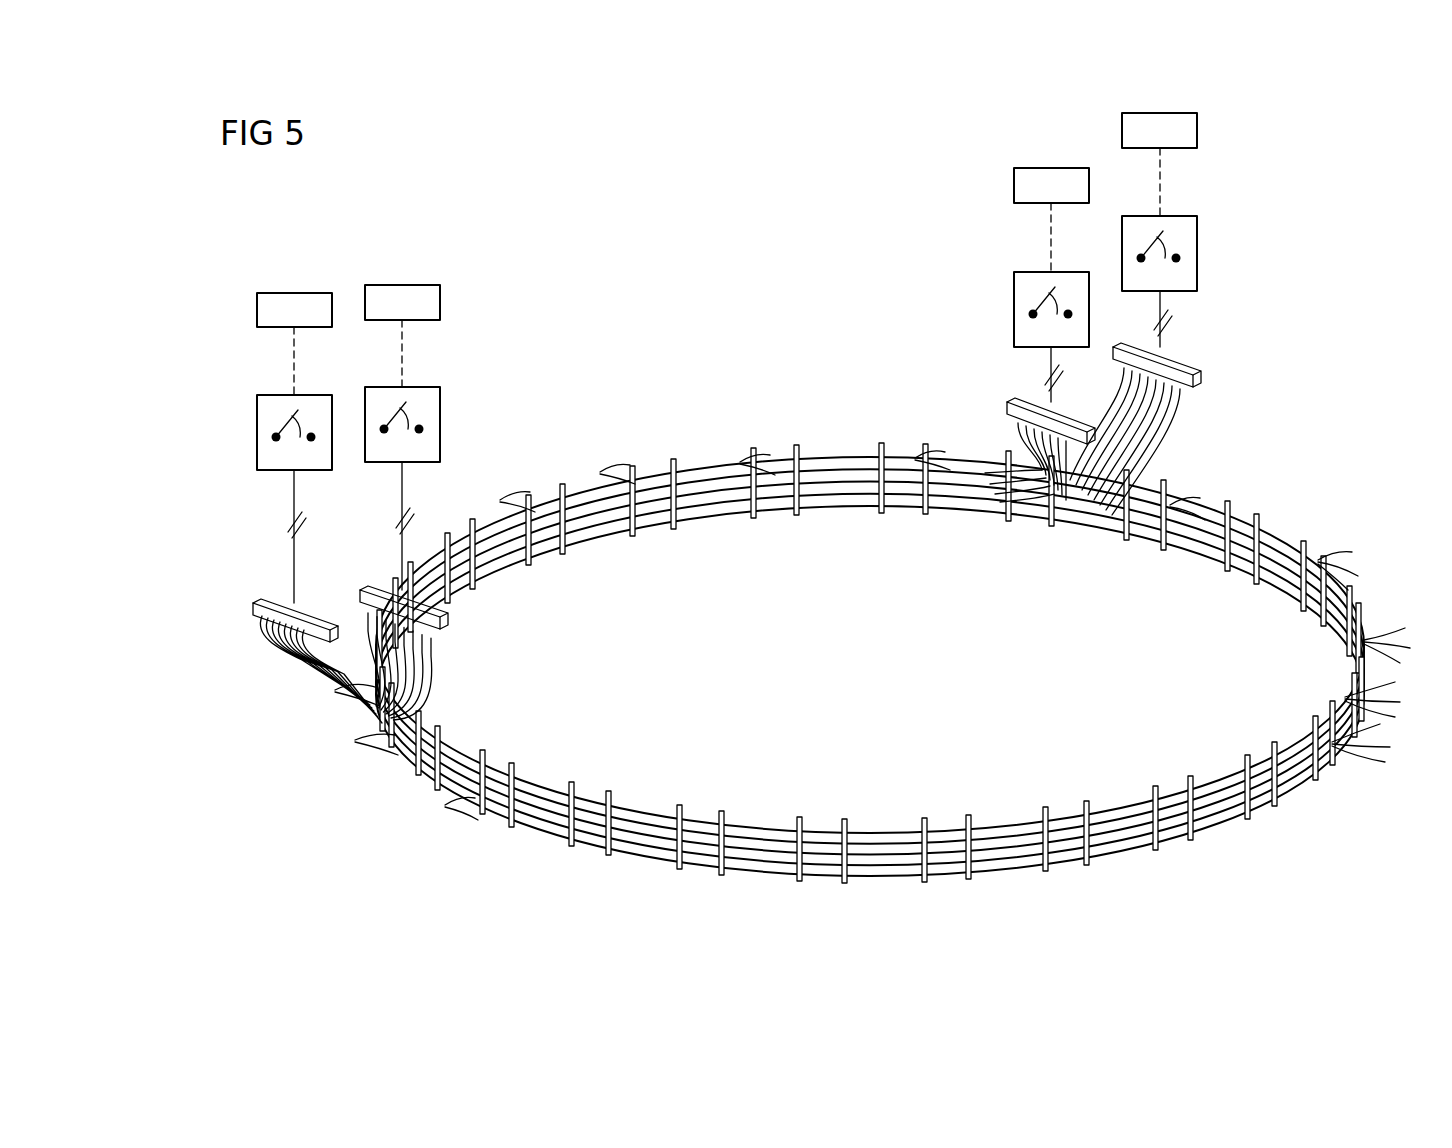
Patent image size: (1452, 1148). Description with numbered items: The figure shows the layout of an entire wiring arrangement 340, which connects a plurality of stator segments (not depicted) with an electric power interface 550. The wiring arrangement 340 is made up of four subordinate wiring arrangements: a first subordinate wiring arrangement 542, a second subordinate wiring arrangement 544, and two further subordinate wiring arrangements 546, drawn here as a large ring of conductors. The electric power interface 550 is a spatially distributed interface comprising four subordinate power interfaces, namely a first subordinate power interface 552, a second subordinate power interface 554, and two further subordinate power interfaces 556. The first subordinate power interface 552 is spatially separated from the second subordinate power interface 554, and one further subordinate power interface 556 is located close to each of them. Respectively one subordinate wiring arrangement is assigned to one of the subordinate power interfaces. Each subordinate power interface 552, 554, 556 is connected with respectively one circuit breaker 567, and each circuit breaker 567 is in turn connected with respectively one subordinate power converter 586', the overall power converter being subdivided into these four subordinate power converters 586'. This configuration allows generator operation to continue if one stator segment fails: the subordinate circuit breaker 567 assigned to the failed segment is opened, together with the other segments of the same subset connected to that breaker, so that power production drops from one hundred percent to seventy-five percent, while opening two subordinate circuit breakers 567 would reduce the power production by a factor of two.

The wiring arrangement 340 is at (690, 440).
The first subordinate wiring arrangement 542 is at (840, 455).
The second subordinate wiring arrangement 544 is at (837, 510).
The further subordinate wiring arrangement 546 is at (1200, 556).
The electric power interface 550 is at (746, 503).
The first subordinate power interface 552 is at (1008, 386).
The second subordinate power interface 554 is at (322, 600).
The further subordinate power interface 556 is at (440, 610).
The circuit breaker 567 is at (257, 432).
The subordinate power converter 586' is at (726, 244).